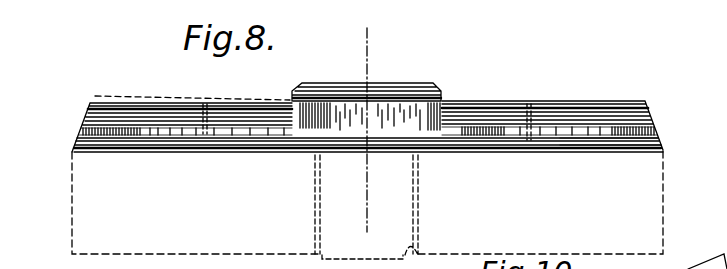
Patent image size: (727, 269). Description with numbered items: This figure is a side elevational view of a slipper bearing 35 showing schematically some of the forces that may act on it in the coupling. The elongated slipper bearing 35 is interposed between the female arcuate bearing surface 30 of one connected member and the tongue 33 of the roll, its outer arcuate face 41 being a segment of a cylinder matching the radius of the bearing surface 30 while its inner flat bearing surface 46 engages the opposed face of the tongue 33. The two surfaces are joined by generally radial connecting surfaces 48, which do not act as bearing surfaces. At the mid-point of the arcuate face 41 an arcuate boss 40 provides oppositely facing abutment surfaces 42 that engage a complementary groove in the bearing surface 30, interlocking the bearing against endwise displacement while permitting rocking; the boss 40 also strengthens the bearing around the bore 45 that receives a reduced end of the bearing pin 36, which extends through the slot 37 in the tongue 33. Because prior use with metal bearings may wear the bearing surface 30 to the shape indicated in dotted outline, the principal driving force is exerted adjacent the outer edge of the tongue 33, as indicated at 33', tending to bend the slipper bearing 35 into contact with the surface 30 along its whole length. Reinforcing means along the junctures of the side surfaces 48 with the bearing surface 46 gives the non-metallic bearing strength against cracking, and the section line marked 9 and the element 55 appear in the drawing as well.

The section line 9- 9 is at (345, 210).
The arcuate bearing surface 30 is at (105, 95).
The tongue 33 is at (346, 202).
The point of principal driving force 33' is at (146, 184).
The slipper bearing 35 is at (238, 83).
The bearing pin 36 is at (407, 263).
The slot 37 is at (320, 230).
The arcuate boss 40 is at (415, 88).
The arcuate face 41 is at (613, 113).
The abutment surfaces 42 is at (445, 100).
The bore 45 is at (342, 150).
The flat bearing surface 46 is at (606, 153).
The radial connecting surfaces 48 is at (176, 137).
The lower flange 55 is at (283, 142).